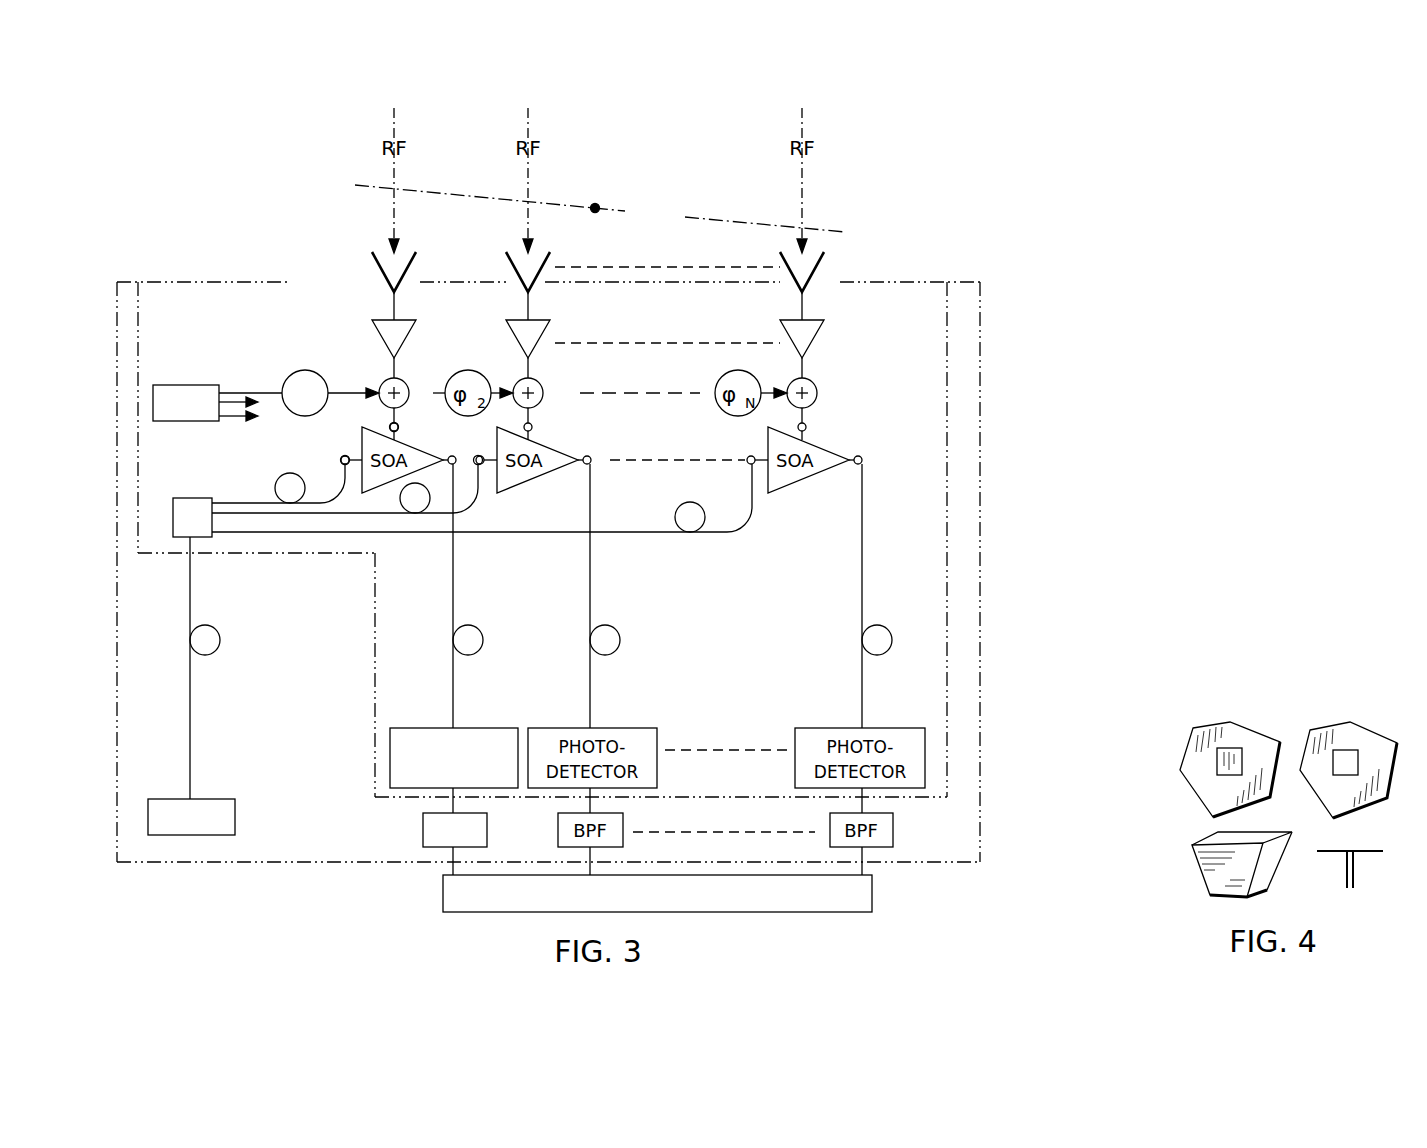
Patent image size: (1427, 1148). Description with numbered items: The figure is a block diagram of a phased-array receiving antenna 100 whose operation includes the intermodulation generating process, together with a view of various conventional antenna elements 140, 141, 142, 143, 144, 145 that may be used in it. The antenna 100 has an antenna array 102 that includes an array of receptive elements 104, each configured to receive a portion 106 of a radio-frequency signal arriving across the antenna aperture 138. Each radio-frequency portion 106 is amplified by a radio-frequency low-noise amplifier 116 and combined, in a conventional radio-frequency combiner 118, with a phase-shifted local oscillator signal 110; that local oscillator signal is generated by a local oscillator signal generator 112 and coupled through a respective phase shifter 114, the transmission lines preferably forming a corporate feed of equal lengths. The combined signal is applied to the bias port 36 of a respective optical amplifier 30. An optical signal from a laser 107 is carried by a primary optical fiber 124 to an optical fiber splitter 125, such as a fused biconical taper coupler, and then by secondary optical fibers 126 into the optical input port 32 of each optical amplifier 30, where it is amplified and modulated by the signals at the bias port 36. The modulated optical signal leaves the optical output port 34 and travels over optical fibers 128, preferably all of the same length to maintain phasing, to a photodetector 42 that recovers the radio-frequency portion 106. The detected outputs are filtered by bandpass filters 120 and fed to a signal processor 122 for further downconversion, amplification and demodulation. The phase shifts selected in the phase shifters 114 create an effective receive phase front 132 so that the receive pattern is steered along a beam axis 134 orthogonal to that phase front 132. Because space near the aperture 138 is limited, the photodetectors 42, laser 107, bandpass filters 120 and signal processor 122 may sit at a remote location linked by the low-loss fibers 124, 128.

In FIG. 3, the phased-array receiving antenna 100 is at (985, 300).
In FIG. 3, the antenna array 102 is at (952, 452).
In FIG. 3, the receptive elements 104 is at (375, 272).
In FIG. 3, the radio-frequency signal portion 106 is at (394, 122).
In FIG. 3, the laser 107 is at (148, 816).
In FIG. 3, the phase-shifted local oscillator signal 110 is at (358, 390).
In FIG. 3, the local oscillator signal generator 112 is at (205, 384).
In FIG. 3, the phase shifter 114 is at (293, 370).
In FIG. 3, the radio-frequency low-noise amplifier 116 is at (375, 312).
In FIG. 3, the radio-frequency combiner 118 is at (407, 380).
In FIG. 3, the bandpass filter 120 is at (423, 828).
In FIG. 3, the signal processor 122 is at (443, 893).
In FIG. 3, the primary optical fiber 124 is at (188, 698).
In FIG. 3, the optical fiber splitter 125 is at (200, 497).
In FIG. 3, the secondary optical fibers 126 is at (252, 538).
In FIG. 3, the optical fibers 128 is at (452, 585).
In FIG. 3, the receive phase front 132 is at (600, 208).
In FIG. 3, the beam axis 134 is at (608, 83).
In FIG. 3, the antenna aperture 138 is at (858, 245).
In FIG. 3, the optical amplifier 30 is at (362, 428).
In FIG. 3, the optical input port 32 is at (338, 459).
In FIG. 3, the optical output port 34 is at (474, 455).
In FIG. 3, the bias port 36 is at (387, 424).
In FIG. 3, the photodetector 42 is at (390, 757).
In FIG. 4, the waveguide block 140 is at (1198, 868).
In FIG. 4, the electrode 141 is at (1344, 870).
In FIG. 4, the crystal body 142 is at (1217, 766).
In FIG. 4, the facet 143 is at (1248, 732).
In FIG. 4, the crystal body 144 is at (1358, 765).
In FIG. 4, the facet 145 is at (1366, 732).